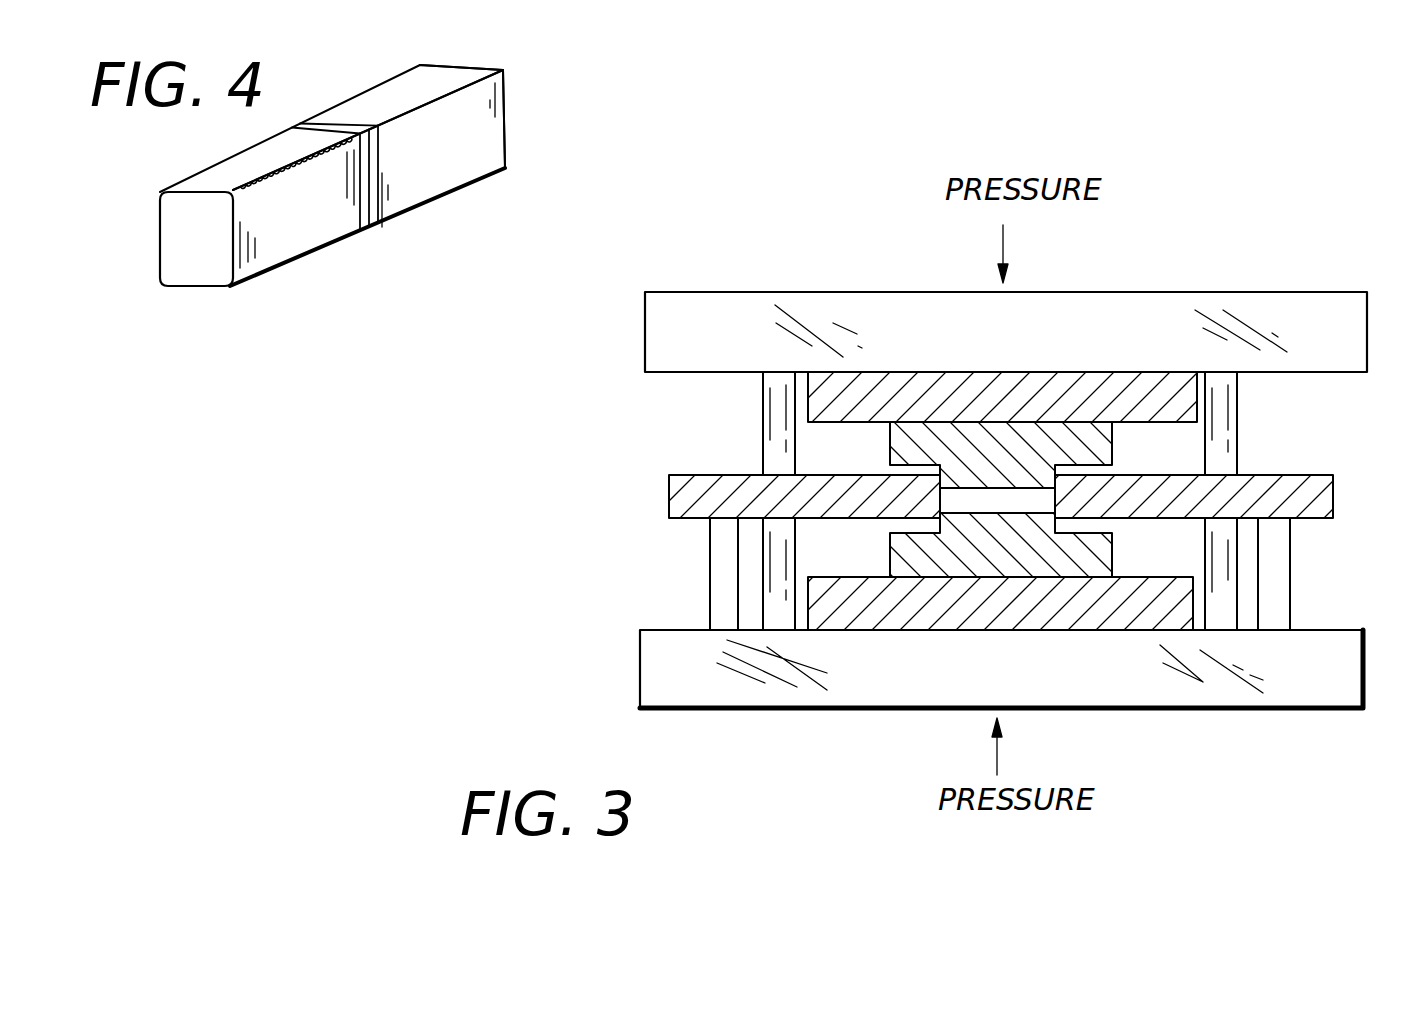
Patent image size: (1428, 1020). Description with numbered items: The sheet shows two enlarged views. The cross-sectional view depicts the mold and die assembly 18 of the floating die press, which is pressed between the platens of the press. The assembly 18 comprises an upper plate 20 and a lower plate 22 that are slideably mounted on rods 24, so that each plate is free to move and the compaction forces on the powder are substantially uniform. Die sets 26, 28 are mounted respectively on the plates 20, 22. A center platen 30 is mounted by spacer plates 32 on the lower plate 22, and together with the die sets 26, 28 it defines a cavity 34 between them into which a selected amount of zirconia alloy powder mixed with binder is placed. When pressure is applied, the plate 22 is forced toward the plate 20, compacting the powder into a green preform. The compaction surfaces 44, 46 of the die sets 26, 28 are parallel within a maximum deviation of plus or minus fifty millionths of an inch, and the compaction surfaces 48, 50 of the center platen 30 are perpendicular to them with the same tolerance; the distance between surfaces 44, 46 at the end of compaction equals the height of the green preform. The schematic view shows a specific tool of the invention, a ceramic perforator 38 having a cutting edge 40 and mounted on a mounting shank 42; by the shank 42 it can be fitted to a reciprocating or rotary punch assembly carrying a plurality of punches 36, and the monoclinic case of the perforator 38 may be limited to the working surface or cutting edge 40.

In FIG. 3, the mold and die assembly 18 is at (1142, 262).
In FIG. 3, the plate 20 is at (883, 292).
In FIG. 3, the plate 22 is at (640, 674).
In FIG. 3, the rods 24 is at (763, 418).
In FIG. 3, the die set 26 is at (1115, 452).
In FIG. 3, the die set 28 is at (1120, 574).
In FIG. 3, the center platen 30 is at (684, 476).
In FIG. 3, the spacer plates 32 is at (710, 565).
In FIG. 3, the cavity 34 is at (947, 520).
In FIG. 4, the punches 36 is at (432, 221).
In FIG. 4, the ceramic perforator 38 is at (329, 240).
In FIG. 4, the cutting edge 40 is at (203, 266).
In FIG. 4, the mounting shank 42 is at (507, 128).
In FIG. 3, the compaction surface 44 is at (1026, 484).
In FIG. 3, the compaction surface 46 is at (1014, 513).
In FIG. 3, the compaction surface 48 is at (948, 498).
In FIG. 3, the compaction surface 50 is at (1050, 496).